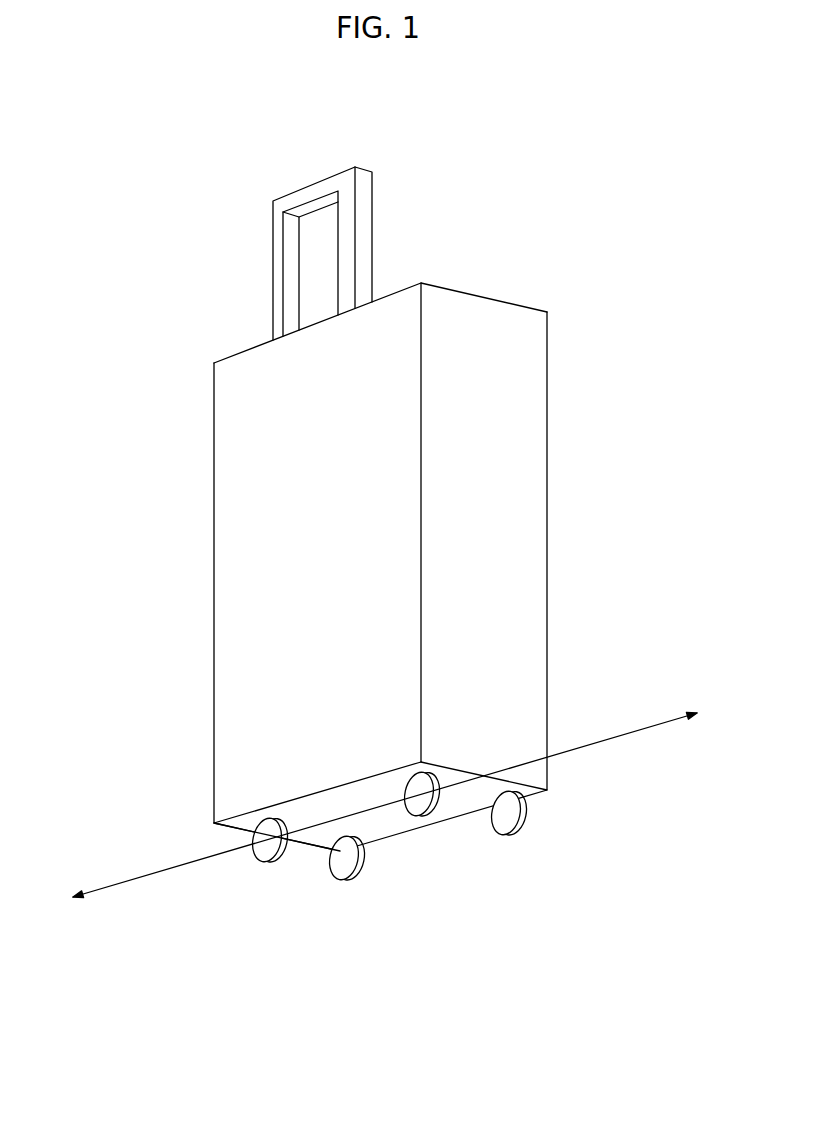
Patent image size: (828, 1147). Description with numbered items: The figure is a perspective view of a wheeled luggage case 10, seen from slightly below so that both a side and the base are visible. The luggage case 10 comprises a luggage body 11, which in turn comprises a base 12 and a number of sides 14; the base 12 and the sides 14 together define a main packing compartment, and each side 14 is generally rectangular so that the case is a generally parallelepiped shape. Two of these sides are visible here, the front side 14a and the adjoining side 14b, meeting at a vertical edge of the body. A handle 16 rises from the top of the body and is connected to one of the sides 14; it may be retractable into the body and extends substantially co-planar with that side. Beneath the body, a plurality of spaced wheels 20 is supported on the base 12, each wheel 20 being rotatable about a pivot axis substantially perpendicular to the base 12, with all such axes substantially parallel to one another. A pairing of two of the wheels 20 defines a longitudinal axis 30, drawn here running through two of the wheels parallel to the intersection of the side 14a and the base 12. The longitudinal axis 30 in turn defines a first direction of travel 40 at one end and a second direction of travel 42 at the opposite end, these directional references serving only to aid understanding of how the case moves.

The wheeled luggage case 10 is at (385, 554).
The luggage body 11 is at (487, 295).
The base 12 is at (387, 823).
The sides 14 is at (381, 528).
The side 14a is at (248, 567).
The side 14b is at (522, 525).
The handle 16 is at (288, 268).
The wheels 20 is at (268, 847).
The longitudinal axis 30 is at (305, 767).
The first direction of travel 40 is at (385, 783).
The second direction of travel 42 is at (177, 868).